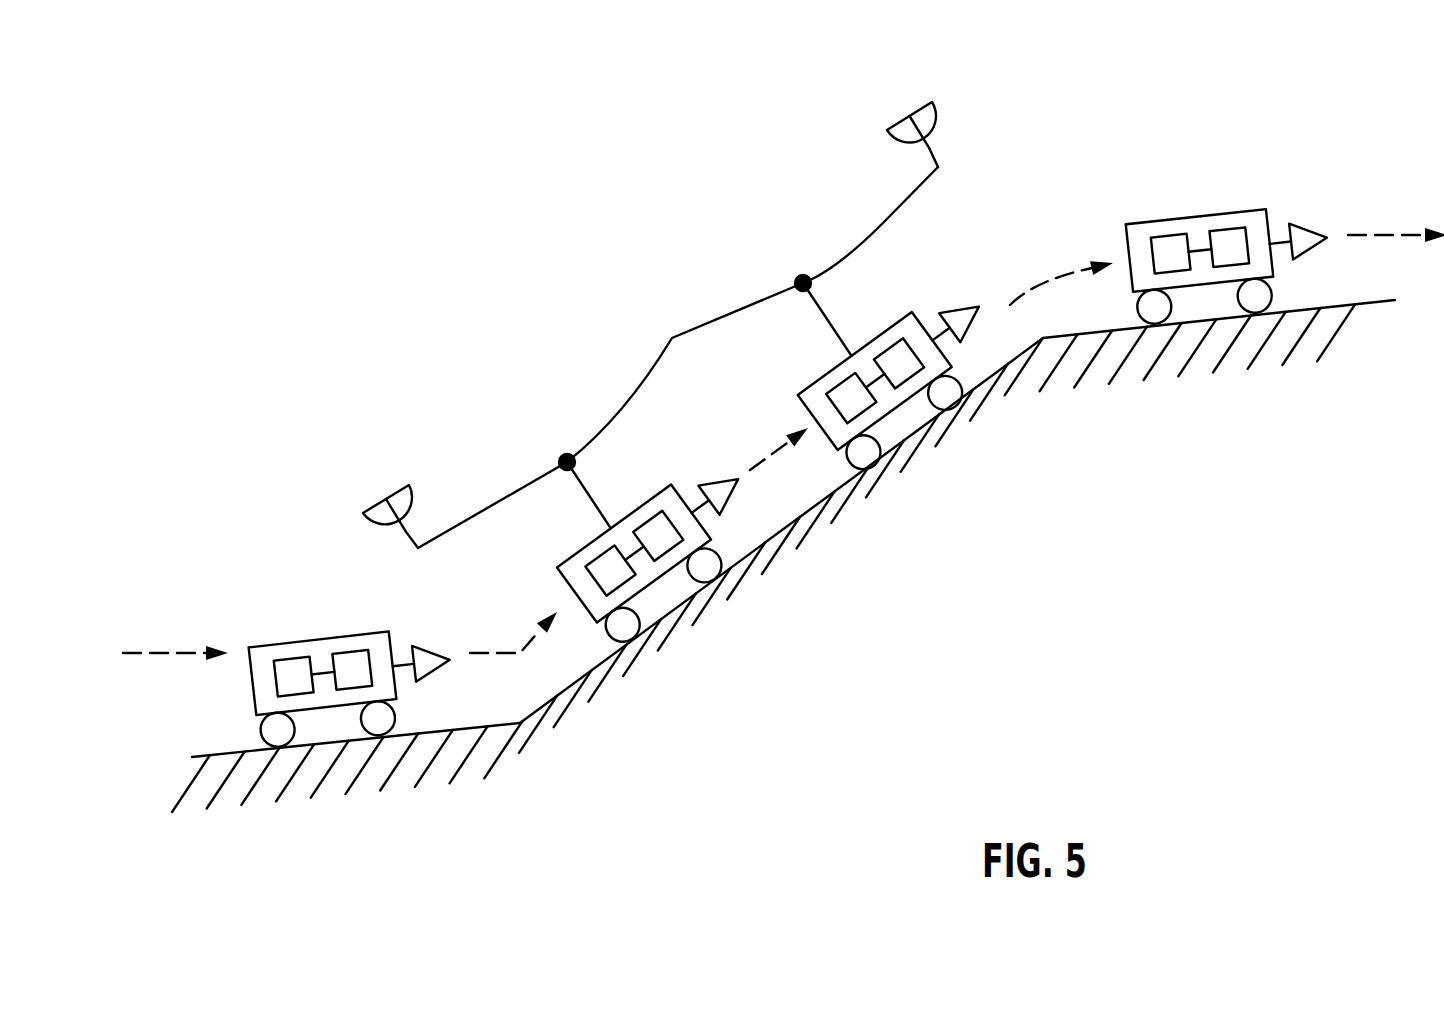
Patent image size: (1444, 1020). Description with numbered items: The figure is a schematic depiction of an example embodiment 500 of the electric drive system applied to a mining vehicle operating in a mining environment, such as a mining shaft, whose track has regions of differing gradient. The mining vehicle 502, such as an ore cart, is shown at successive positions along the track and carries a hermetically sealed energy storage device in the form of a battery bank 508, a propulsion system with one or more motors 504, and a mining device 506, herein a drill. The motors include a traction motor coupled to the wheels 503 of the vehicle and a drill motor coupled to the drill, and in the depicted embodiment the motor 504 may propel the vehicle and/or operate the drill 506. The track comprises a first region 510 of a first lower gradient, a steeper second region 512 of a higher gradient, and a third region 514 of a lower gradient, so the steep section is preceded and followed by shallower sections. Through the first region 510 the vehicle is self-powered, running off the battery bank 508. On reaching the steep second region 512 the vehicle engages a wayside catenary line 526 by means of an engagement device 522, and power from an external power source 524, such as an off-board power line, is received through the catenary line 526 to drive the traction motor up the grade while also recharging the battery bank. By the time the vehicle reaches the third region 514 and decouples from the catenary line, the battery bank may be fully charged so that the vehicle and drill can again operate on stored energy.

The example embodiment 500 is at (1306, 71).
The mining vehicle 502 is at (257, 647).
The wheels 503 is at (277, 742).
The motor 504 is at (340, 653).
The mining device 506 is at (427, 650).
The battery bank 508 is at (287, 658).
The first region 510 is at (402, 810).
The second region 512 is at (870, 525).
The third region 514 is at (1237, 385).
The engagement device 522 is at (565, 455).
The external power source 524 is at (936, 152).
The catenary line 526 is at (697, 332).